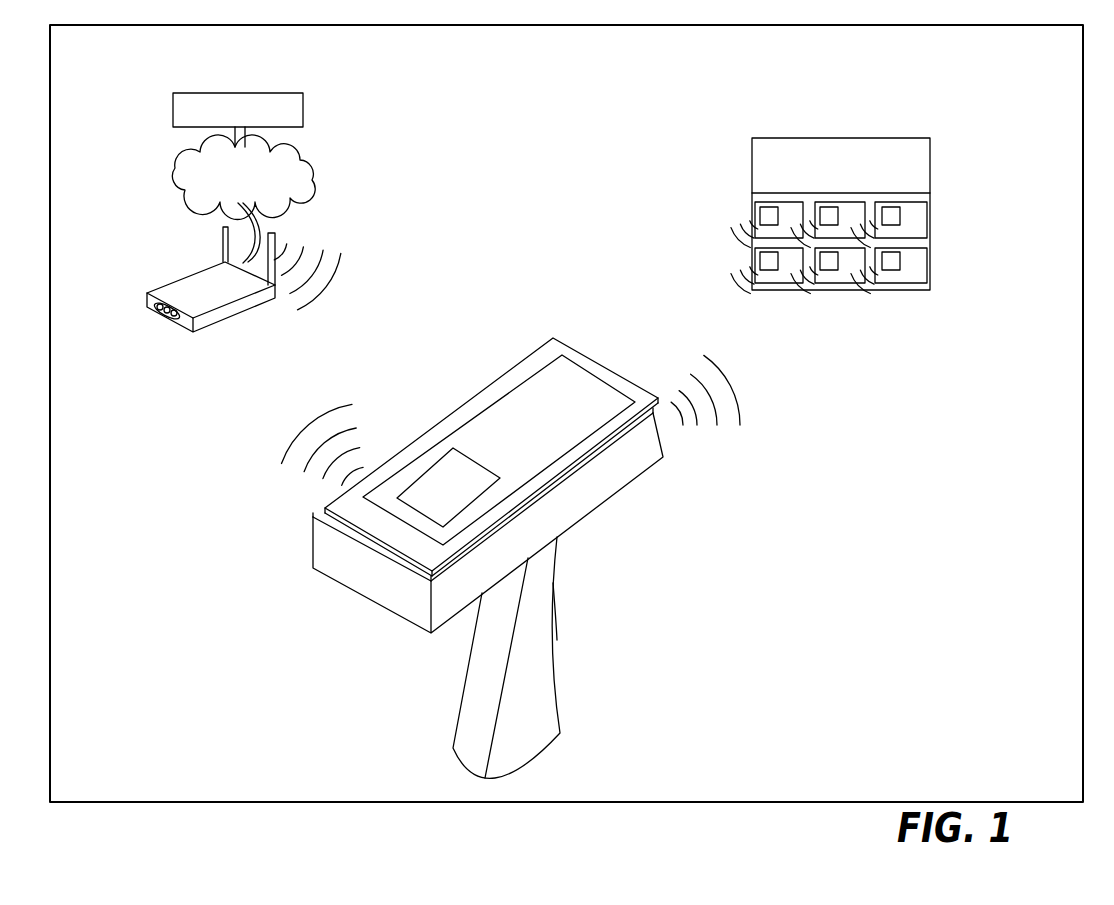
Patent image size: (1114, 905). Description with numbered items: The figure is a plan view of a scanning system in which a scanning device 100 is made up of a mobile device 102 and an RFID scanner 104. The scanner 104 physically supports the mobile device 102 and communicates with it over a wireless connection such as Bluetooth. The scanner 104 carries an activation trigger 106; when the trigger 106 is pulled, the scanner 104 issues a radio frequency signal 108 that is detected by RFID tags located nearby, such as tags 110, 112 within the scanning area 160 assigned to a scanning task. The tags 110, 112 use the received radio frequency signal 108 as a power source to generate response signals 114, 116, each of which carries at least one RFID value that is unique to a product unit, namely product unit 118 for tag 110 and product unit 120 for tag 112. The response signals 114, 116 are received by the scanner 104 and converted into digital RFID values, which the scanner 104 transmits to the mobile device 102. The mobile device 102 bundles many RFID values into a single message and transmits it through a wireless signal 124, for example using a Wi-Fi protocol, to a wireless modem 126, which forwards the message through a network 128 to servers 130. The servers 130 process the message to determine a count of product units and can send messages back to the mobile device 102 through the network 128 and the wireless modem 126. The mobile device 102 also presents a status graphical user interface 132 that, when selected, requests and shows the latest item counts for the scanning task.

The scanning device 100 is at (506, 524).
The mobile device 102 is at (607, 377).
The RFID scanner 104 is at (543, 695).
The activation trigger 106 is at (553, 583).
The radio frequency signal 108 is at (697, 425).
The RFID tag 110 is at (892, 212).
The RFID tag 112 is at (900, 260).
The response signal 114 is at (857, 243).
The response signal 116 is at (863, 290).
The product unit 118 is at (918, 228).
The product unit 120 is at (913, 277).
The wireless signal 124 is at (300, 466).
The wireless modem 126 is at (253, 307).
The network 128 is at (316, 170).
The servers 130 is at (303, 100).
The status graphical user interface 132 is at (420, 473).
The scanning area 160 is at (728, 123).